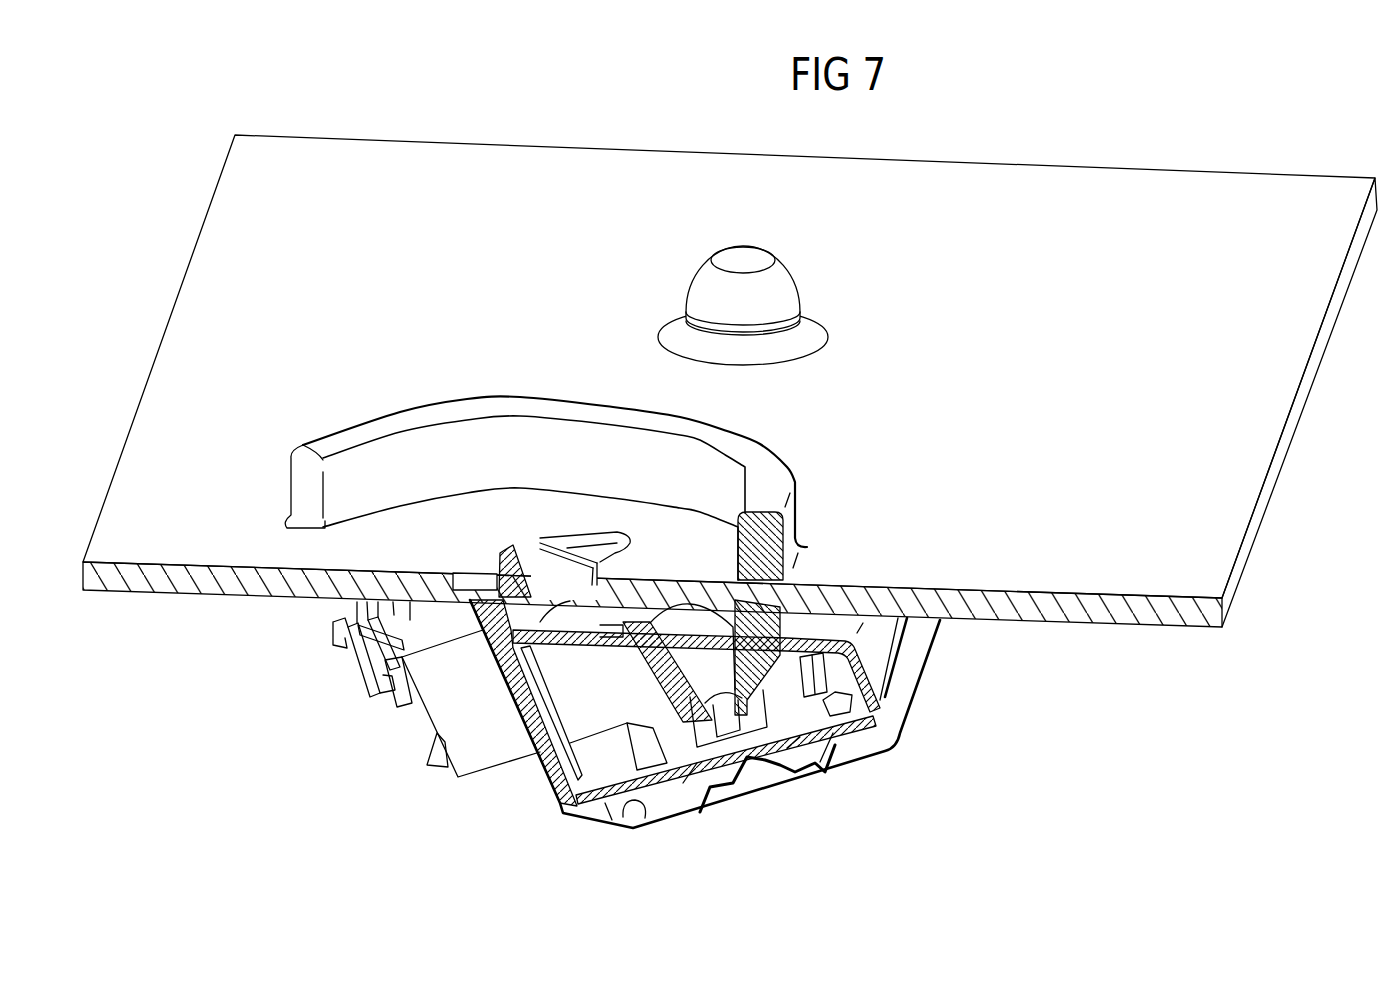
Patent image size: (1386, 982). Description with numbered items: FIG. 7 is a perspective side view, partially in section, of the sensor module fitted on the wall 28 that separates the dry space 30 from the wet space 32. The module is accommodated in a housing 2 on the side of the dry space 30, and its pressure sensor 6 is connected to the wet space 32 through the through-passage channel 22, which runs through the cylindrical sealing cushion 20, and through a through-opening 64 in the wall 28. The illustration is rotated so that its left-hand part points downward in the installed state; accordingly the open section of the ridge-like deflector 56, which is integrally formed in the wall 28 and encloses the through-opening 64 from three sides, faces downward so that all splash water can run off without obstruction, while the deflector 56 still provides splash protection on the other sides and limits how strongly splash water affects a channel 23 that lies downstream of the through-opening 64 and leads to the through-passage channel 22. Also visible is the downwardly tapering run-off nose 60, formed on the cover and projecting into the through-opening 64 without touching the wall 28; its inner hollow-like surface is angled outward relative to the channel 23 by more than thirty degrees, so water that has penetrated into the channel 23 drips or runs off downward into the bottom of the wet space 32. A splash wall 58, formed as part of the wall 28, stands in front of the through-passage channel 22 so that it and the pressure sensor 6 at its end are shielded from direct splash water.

The housing 2 is at (654, 737).
The pressure sensor 6 is at (753, 760).
The sealing cushion 20 is at (708, 730).
The through-passage channel 22 is at (670, 635).
The channel 23 is at (607, 647).
The wall 28 is at (1165, 185).
The dry space 30 is at (1055, 692).
The wet space 32 is at (210, 314).
The deflector 56 is at (296, 490).
The splash wall 58 is at (683, 545).
The run-off nose 60 is at (500, 553).
The through-opening 64 is at (590, 538).